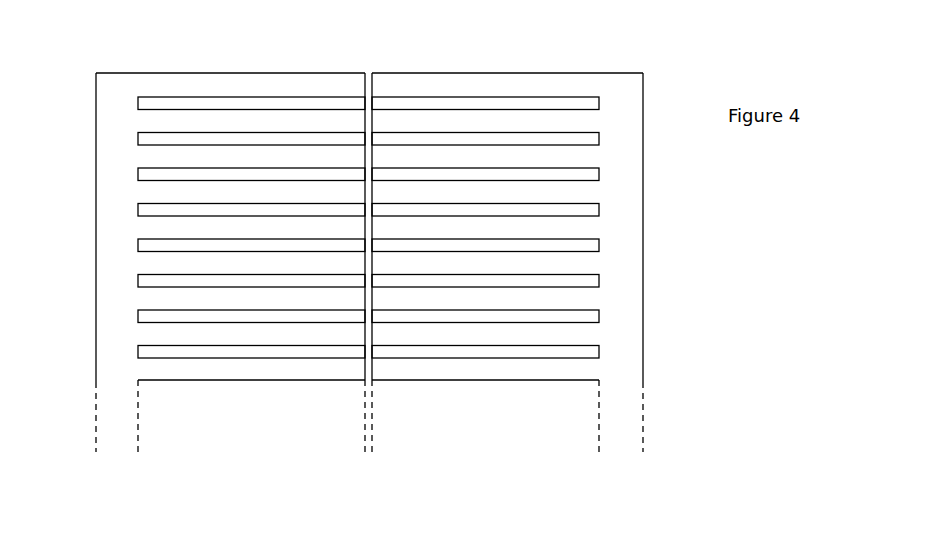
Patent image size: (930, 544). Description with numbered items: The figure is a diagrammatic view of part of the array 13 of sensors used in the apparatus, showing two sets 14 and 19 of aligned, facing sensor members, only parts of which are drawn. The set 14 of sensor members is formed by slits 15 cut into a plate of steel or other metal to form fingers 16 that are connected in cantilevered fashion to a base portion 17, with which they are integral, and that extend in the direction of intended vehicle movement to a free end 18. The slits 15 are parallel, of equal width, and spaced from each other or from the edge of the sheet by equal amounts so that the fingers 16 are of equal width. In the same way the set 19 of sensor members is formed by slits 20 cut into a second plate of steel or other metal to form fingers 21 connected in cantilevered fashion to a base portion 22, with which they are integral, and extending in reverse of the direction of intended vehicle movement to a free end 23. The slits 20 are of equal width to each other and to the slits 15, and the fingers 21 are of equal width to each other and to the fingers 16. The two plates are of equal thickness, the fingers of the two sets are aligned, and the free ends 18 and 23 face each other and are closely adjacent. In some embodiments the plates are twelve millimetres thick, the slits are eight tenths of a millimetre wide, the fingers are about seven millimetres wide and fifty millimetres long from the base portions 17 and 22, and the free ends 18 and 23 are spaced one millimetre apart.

The array of sensors 13 is at (702, 200).
The set of sensor members 14 is at (96, 143).
The slits 15 is at (270, 103).
The fingers 16 is at (208, 81).
The base portion 17 is at (114, 85).
The free end 18 is at (365, 83).
The set of sensor members 19 is at (643, 150).
The slits 20 is at (515, 105).
The fingers 21 is at (463, 83).
The base portion 22 is at (619, 80).
The free end 23 is at (374, 82).